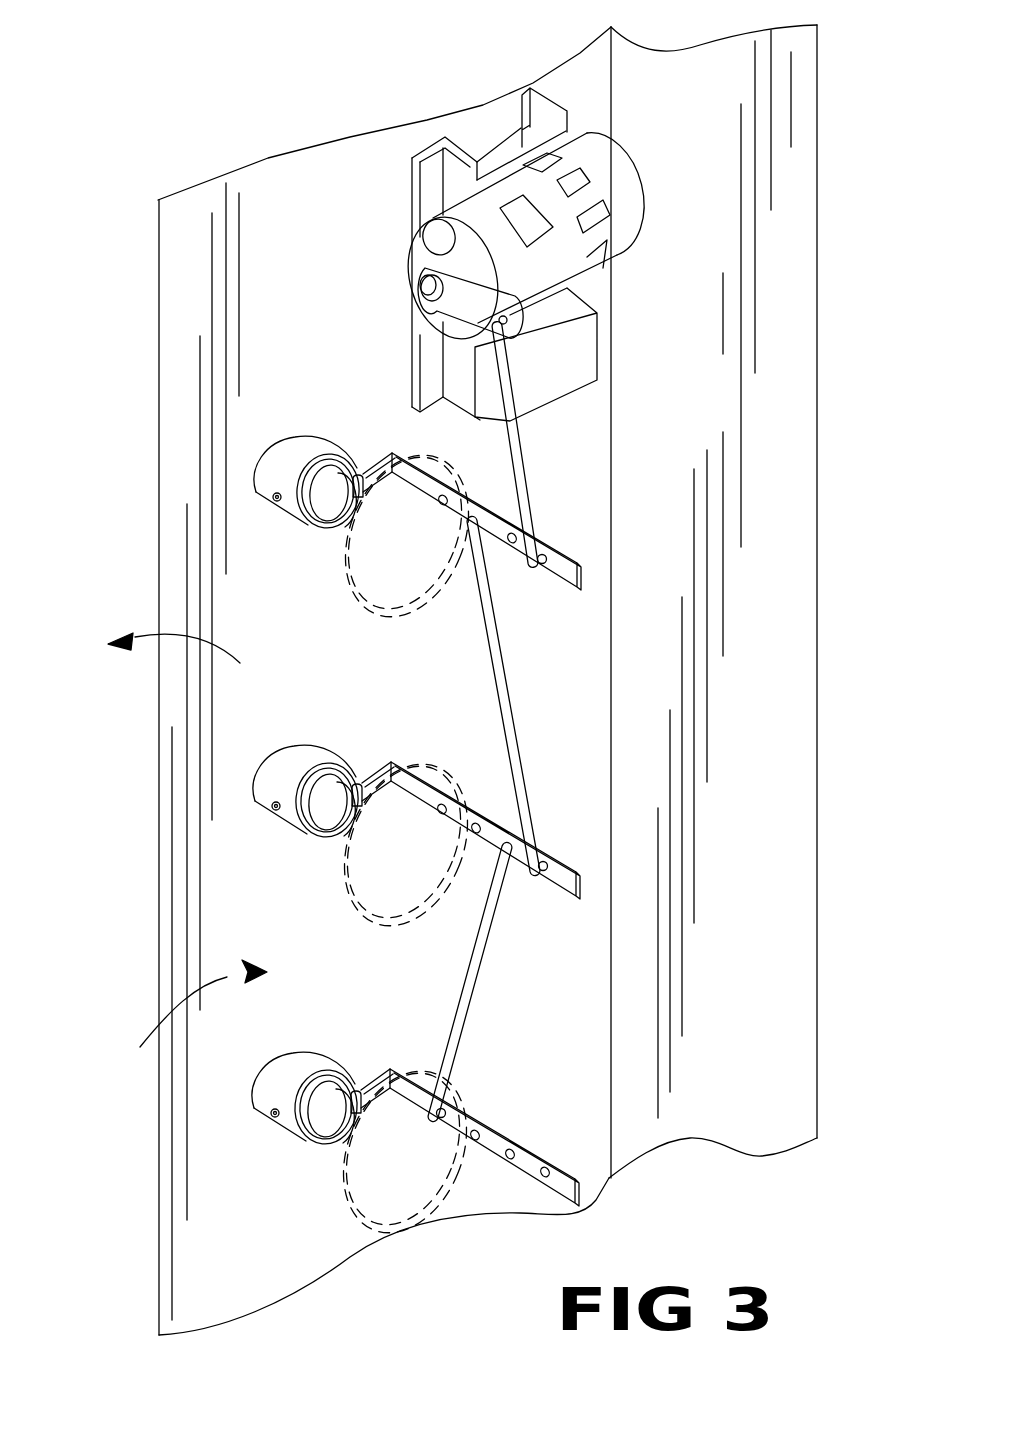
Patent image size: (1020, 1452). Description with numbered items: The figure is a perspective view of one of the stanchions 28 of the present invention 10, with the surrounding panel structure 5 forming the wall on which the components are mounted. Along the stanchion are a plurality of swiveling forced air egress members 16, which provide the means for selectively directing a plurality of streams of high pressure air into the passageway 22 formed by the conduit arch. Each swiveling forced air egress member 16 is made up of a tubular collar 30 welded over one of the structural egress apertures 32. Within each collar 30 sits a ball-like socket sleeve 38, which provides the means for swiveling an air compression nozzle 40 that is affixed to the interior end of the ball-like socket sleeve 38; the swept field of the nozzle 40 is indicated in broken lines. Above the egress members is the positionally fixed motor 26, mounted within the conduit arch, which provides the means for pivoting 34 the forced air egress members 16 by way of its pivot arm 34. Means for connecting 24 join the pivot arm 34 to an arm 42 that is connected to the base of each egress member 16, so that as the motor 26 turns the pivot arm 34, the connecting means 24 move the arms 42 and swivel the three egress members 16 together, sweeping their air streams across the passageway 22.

The mounting panel 5 is at (658, 444).
The present invention 10 is at (263, 158).
The swiveling forced air egress member 16 is at (187, 1024).
The passageway 22 is at (199, 666).
The means for connecting 24 is at (520, 454).
The positionally fixed motor 26 is at (616, 189).
The stanchion 28 is at (215, 889).
The tubular collar 30 is at (309, 446).
The structural egress aperture 32 is at (258, 779).
The pivot arm 34 is at (455, 300).
The ball-like socket sleeve 38 is at (327, 525).
The air compression nozzle 40 is at (427, 580).
The arm 42 is at (572, 560).